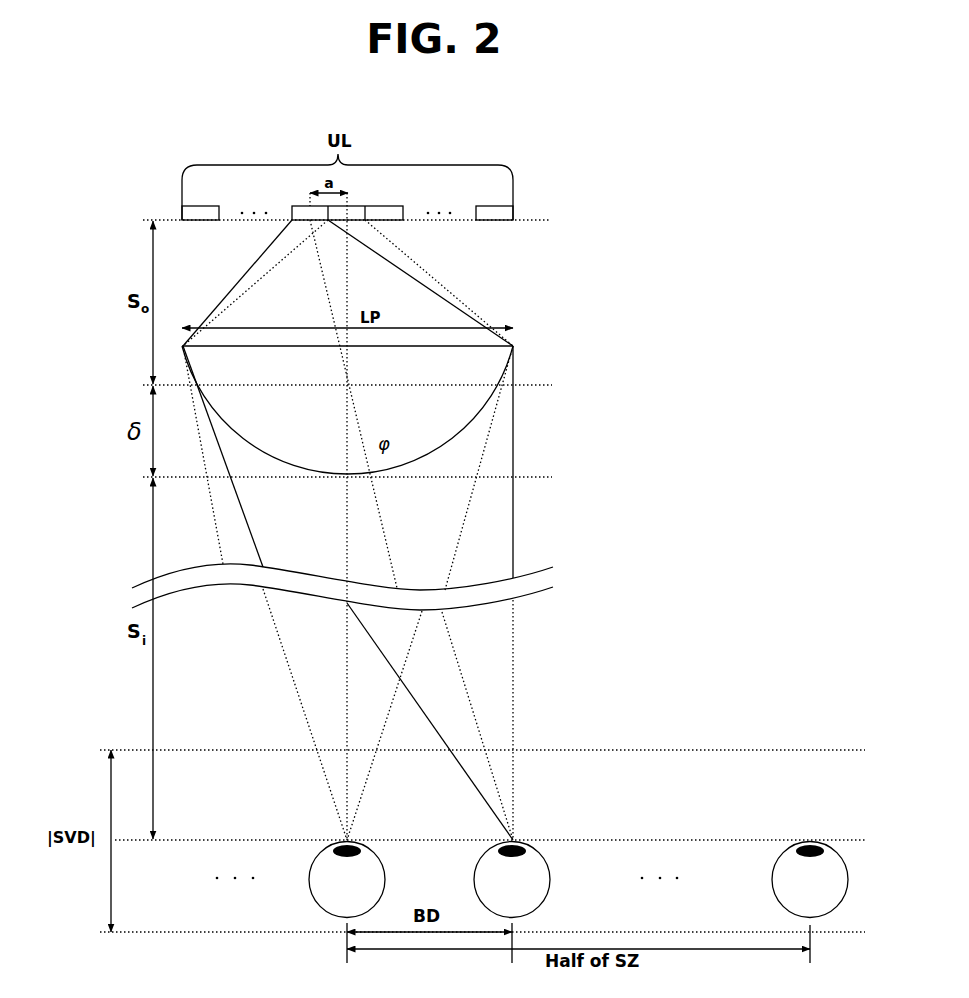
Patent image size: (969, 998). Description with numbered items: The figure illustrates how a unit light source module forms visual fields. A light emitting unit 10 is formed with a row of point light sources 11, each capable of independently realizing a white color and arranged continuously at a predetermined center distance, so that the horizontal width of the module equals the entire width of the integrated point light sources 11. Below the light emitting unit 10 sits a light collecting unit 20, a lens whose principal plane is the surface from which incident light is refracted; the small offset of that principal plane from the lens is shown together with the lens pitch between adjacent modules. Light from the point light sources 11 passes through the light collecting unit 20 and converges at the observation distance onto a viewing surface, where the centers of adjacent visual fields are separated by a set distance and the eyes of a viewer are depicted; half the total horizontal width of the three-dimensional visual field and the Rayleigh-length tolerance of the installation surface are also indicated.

The light emitting unit 10 is at (523, 192).
The point light source 11 is at (497, 221).
The light collecting unit 20 is at (498, 370).